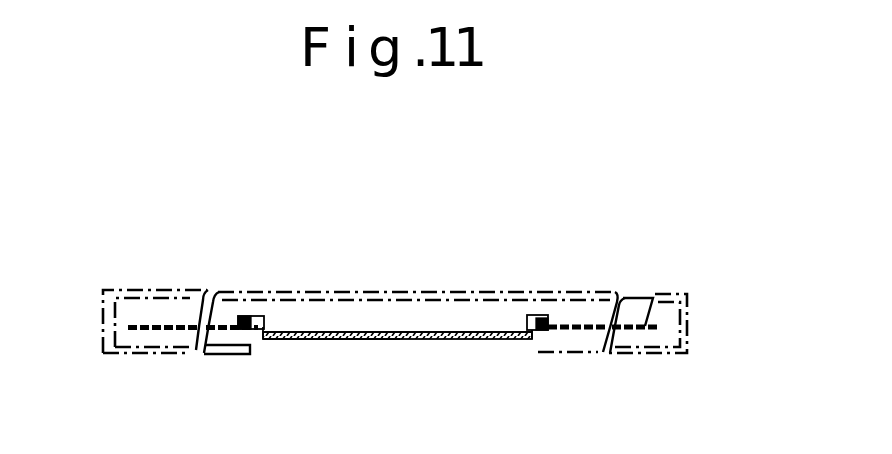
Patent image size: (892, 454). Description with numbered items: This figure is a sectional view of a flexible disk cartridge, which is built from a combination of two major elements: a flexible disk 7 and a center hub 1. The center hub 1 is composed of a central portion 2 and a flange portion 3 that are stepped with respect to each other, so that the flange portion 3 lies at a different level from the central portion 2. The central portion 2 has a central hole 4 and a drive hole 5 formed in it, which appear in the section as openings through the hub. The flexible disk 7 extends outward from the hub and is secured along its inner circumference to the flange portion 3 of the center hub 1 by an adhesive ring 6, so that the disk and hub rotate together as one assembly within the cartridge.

The center hub 1 is at (394, 308).
The central portion 2 is at (447, 329).
The flange portion 3 is at (543, 318).
The central hole 4 is at (391, 341).
The drive hole 5 is at (314, 340).
The adhesive ring 6 is at (548, 321).
The flexible disk 7 is at (655, 298).